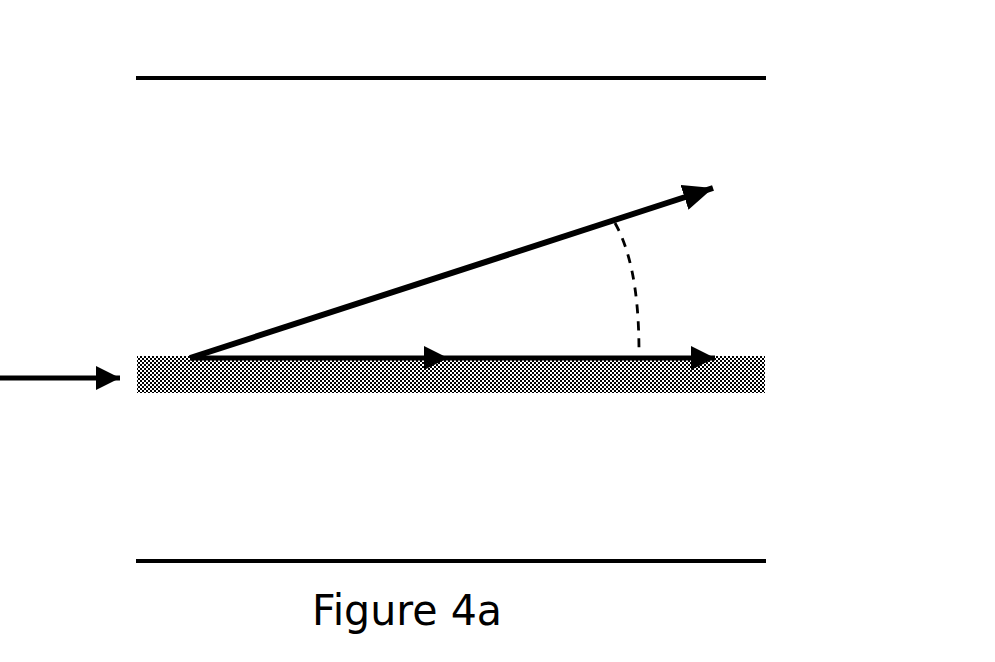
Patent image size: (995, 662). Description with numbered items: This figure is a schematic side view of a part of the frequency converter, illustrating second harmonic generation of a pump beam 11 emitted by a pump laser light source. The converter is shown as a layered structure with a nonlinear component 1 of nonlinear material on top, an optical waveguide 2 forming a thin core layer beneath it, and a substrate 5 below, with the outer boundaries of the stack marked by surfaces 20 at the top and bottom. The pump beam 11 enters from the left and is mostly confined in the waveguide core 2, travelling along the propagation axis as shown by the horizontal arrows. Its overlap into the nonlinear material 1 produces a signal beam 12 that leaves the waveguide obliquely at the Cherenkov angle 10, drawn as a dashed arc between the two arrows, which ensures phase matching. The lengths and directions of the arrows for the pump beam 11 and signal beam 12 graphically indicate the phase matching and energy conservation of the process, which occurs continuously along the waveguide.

The nonlinear component 1 is at (690, 127).
The optical waveguide 2 is at (713, 380).
The substrate 5 is at (700, 468).
The Cherenkov angle 10 is at (648, 300).
The pump beam 11 is at (545, 350).
The signal beam 12 is at (707, 203).
The outer surface 20 is at (225, 78).